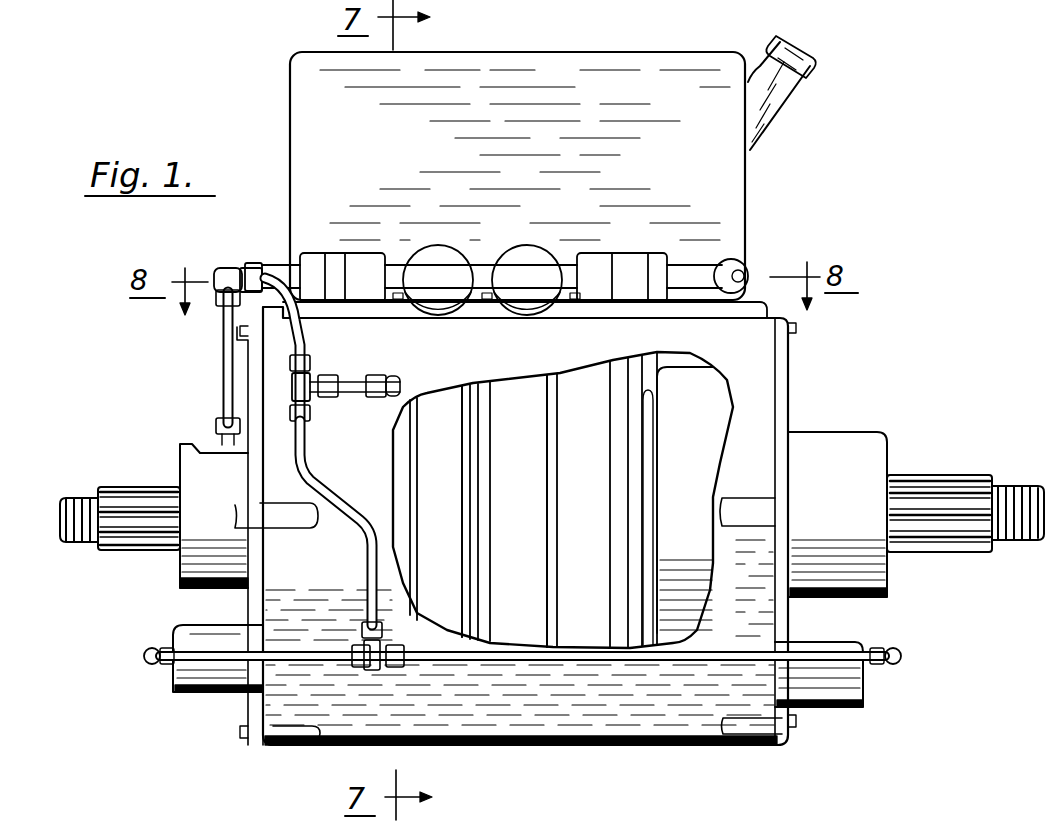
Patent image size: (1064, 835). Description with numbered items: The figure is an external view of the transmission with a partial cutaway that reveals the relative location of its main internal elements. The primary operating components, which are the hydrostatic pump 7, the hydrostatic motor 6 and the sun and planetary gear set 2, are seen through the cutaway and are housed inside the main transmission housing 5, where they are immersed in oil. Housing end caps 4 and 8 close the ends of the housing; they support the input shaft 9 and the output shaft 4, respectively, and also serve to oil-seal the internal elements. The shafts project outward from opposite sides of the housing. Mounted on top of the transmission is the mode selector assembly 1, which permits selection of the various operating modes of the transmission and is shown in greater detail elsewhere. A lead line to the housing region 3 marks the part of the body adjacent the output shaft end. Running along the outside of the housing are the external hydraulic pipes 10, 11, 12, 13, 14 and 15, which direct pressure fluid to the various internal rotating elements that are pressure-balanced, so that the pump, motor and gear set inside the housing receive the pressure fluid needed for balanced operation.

The mode selector assembly 1 is at (748, 200).
The sun and planetary gear set 2 is at (697, 422).
The housing 3 is at (790, 398).
The output shaft 4 is at (950, 470).
The main transmission housing 5 is at (717, 750).
The hydrostatic motor 6 is at (513, 553).
The hydrostatic pump 7 is at (433, 537).
The housing end cap 8 is at (247, 713).
The input shaft 9 is at (140, 550).
The external hydraulic pipe 10 is at (218, 380).
The external hydraulic pipe 11 is at (310, 343).
The external hydraulic pipe 12 is at (357, 380).
The external hydraulic pipe 13 is at (355, 530).
The external hydraulic pipe 14 is at (313, 663).
The external hydraulic pipe 15 is at (697, 685).